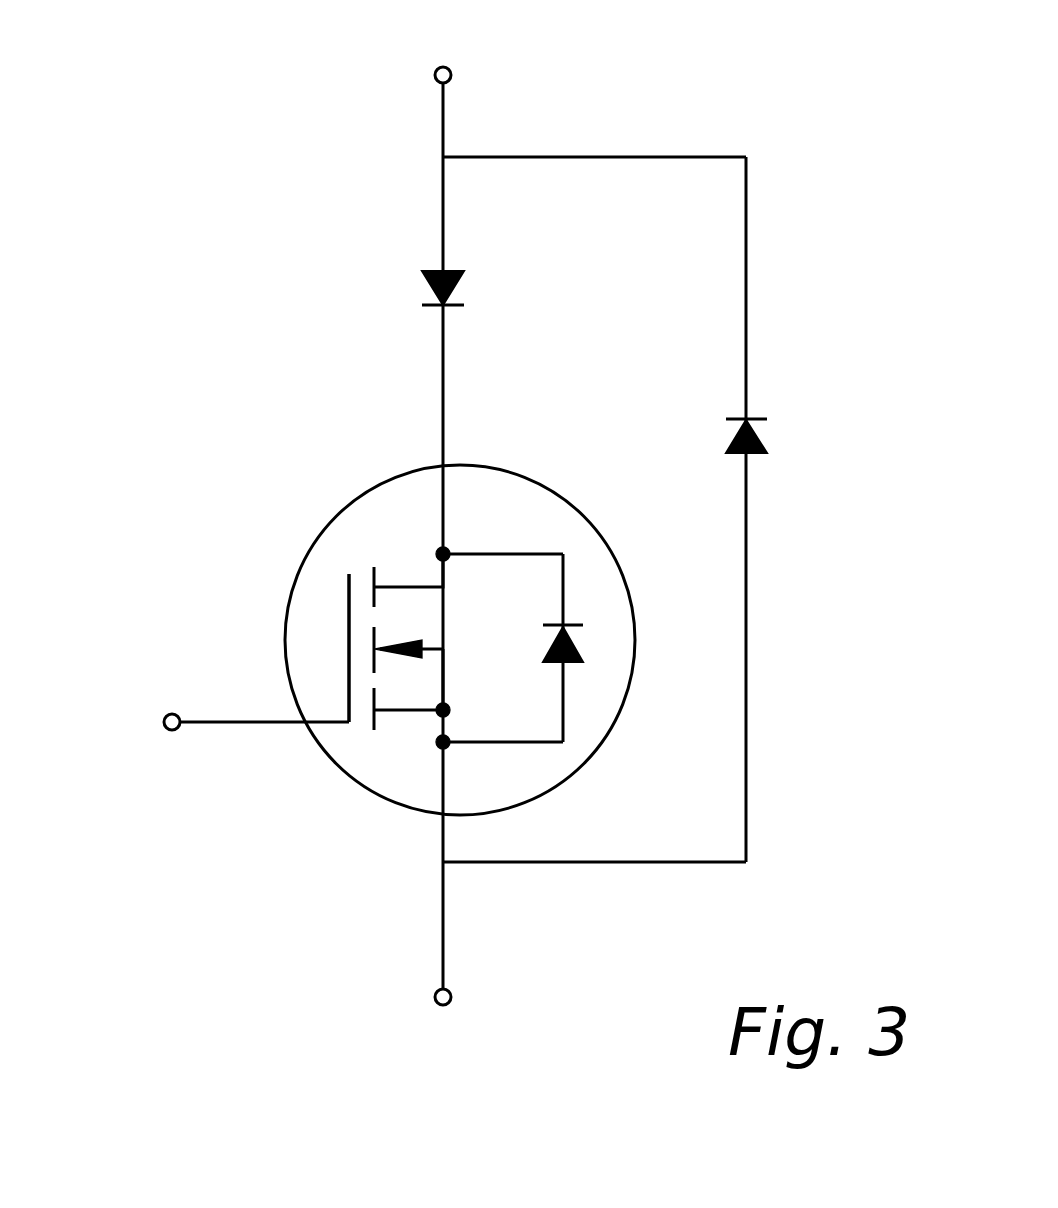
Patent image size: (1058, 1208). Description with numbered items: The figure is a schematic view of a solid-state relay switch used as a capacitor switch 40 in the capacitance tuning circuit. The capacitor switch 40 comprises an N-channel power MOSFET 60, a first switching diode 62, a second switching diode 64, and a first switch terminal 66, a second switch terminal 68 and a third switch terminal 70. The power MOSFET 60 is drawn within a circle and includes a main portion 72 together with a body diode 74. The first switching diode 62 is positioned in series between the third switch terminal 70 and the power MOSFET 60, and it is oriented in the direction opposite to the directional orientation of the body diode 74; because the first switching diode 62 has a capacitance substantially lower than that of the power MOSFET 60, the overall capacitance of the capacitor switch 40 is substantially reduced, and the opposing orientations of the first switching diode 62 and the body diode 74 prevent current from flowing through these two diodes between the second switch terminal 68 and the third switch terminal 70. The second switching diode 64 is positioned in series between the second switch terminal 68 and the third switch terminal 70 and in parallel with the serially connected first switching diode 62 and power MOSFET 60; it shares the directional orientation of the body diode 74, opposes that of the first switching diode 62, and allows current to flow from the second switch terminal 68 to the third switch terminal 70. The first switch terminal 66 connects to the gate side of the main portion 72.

The first parallel capacitor switch 40 is at (170, 150).
The N-channel power MOSFET 60 is at (469, 648).
The first switching diode 62 is at (457, 283).
The second switching diode 64 is at (760, 437).
The first switch terminal 66 is at (172, 712).
The second switch terminal 68 is at (451, 997).
The third switch terminal 70 is at (451, 68).
The main portion 72 is at (402, 582).
The body diode 74 is at (578, 645).